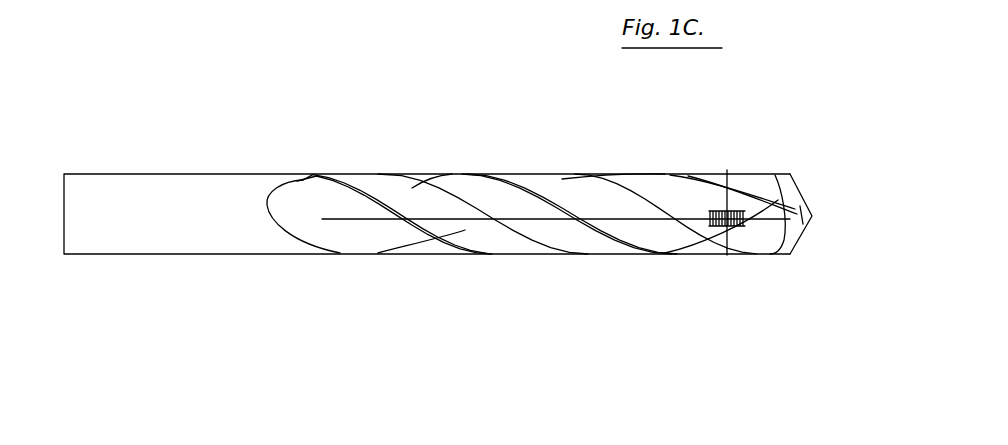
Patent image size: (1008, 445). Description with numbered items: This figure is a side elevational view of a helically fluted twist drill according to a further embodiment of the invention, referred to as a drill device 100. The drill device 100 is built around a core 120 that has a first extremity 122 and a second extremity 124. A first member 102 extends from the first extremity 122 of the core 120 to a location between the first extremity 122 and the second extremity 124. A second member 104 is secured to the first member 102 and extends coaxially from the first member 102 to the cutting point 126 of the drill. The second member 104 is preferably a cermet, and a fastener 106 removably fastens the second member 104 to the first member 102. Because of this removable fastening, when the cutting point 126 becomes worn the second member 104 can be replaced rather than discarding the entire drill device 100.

The drill device 100 is at (348, 158).
The first member 102 is at (568, 235).
The second member 104 is at (767, 233).
The fastener 106 is at (718, 223).
The core 120 is at (457, 232).
The first extremity 122 is at (296, 210).
The second extremity 124 is at (775, 178).
The cutting point 126 is at (802, 218).